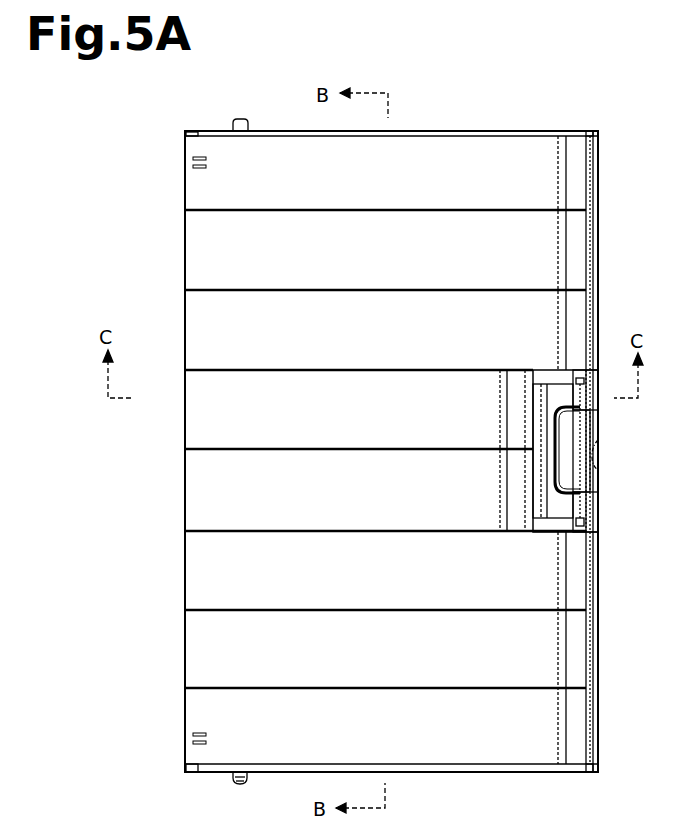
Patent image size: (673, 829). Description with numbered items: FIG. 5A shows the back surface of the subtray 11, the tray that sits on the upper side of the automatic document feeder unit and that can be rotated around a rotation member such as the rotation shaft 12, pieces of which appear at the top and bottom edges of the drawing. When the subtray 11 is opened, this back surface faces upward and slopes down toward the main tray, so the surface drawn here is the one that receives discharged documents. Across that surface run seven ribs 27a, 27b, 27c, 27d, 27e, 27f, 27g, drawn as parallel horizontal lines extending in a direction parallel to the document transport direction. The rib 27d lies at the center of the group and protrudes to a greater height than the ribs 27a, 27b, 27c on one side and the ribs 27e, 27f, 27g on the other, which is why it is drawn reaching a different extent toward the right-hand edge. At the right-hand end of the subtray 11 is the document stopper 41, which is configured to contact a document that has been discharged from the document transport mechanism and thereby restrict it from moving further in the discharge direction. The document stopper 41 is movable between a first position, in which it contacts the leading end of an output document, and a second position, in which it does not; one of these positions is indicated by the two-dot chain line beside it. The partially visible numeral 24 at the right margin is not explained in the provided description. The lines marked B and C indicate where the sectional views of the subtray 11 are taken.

The subtray 11 is at (612, 146).
The rotation shaft 12 is at (237, 118).
The rib 27a is at (185, 210).
The rib 27b is at (185, 290).
The rib 27c is at (185, 370).
The rib 27d is at (185, 449).
The rib 27e is at (185, 531).
The rib 27f is at (185, 610).
The rib 27g is at (185, 688).
The document stopper 41 is at (543, 444).
The cover 24 is at (594, 468).